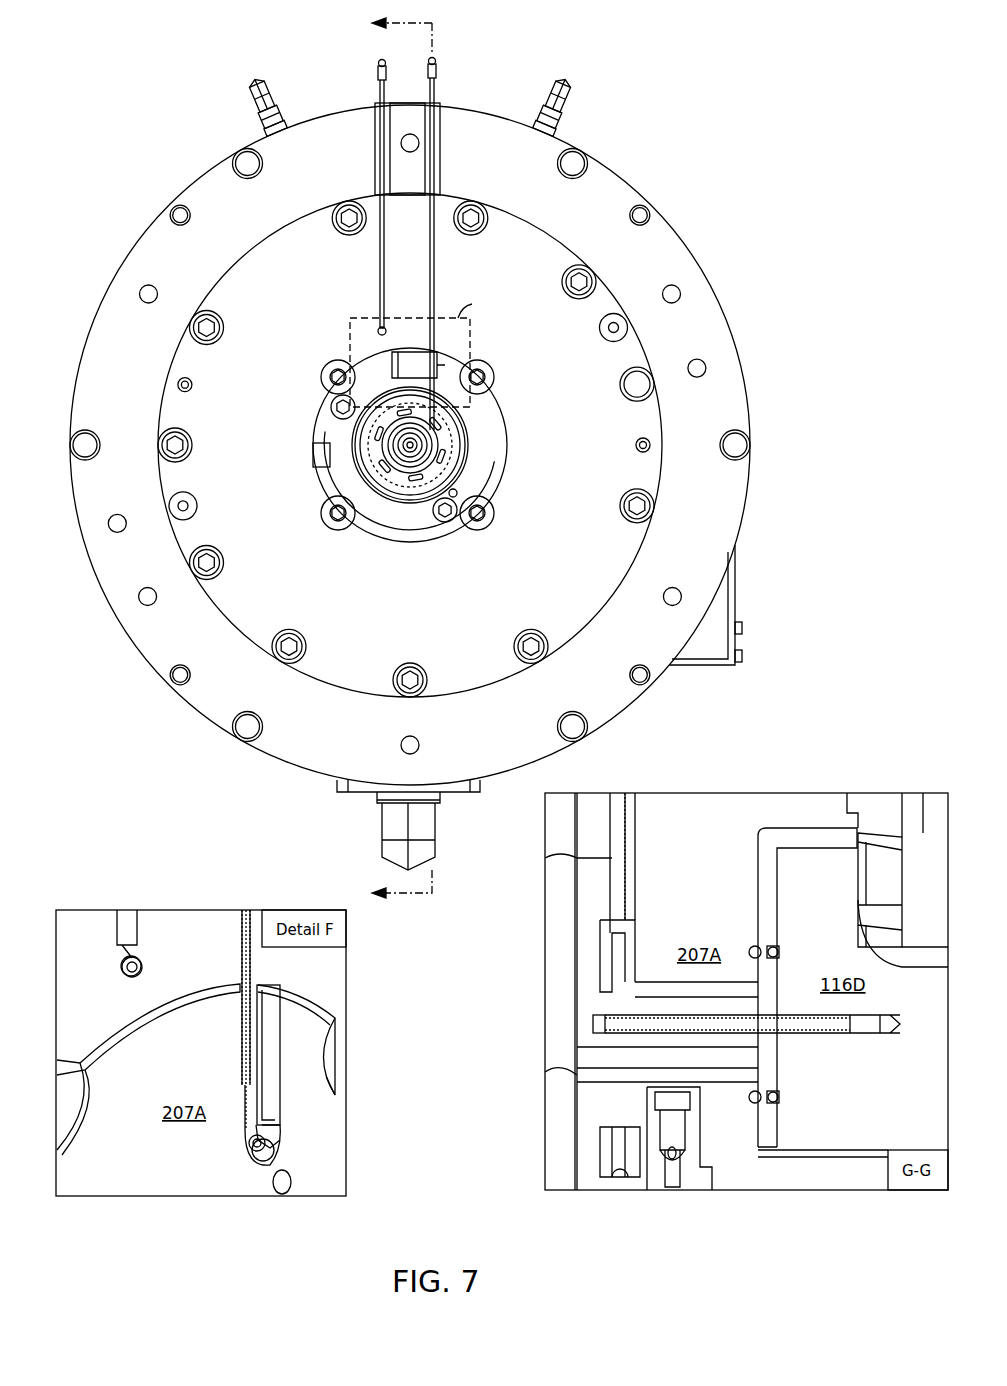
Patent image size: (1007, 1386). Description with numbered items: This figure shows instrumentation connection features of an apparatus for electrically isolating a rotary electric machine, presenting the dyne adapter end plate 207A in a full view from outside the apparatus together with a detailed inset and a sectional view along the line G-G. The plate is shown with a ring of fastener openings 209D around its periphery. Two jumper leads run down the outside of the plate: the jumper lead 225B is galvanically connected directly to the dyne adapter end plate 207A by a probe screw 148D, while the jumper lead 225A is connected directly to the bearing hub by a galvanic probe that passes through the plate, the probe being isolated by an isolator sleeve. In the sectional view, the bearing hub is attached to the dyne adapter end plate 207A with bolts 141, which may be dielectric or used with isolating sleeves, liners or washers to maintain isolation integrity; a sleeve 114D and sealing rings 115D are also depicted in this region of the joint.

The dyne adapter end plate 207A is at (655, 255).
The fastener holes 209D is at (245, 163).
The jumper lead 225A is at (434, 95).
The jumper lead 225B is at (382, 95).
The probe screw 148D is at (125, 968).
The seal rings 115D is at (772, 945).
The insulating sleeve 114D is at (818, 838).
The bolts 141 is at (890, 870).